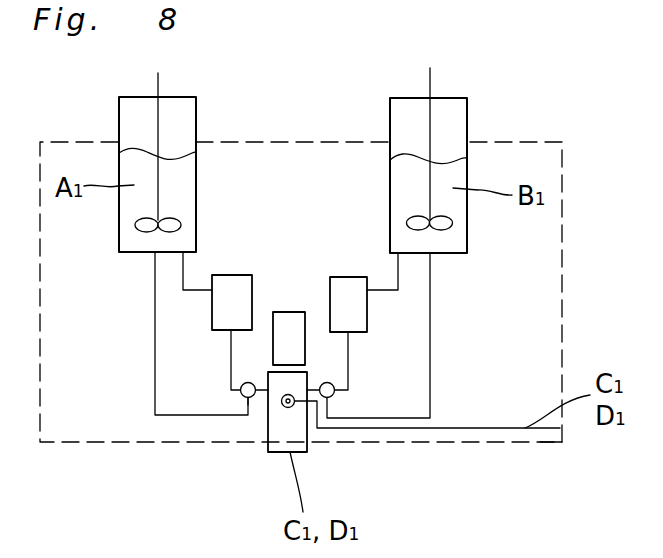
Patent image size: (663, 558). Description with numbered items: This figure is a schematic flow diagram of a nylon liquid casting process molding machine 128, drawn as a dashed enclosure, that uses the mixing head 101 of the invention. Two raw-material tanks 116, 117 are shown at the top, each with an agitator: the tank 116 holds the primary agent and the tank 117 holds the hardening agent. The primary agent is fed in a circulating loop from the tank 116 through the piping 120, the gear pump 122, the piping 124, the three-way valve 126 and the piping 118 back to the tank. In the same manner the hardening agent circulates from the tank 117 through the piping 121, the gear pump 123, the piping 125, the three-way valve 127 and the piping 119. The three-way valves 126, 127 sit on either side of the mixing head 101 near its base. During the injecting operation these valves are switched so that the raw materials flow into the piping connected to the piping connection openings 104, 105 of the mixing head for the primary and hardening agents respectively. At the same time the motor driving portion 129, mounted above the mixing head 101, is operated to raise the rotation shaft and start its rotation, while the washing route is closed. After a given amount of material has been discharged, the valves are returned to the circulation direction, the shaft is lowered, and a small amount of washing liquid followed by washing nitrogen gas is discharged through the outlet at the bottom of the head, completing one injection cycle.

The mixing head 101 is at (277, 452).
The piping connection opening 104 is at (262, 392).
The piping connection opening 105 is at (312, 402).
The raw-material tank 116 is at (183, 107).
The raw-material tank 117 is at (458, 107).
The piping 118 is at (153, 378).
The piping 119 is at (430, 375).
The piping 120 is at (183, 274).
The piping 121 is at (398, 273).
The gear pump 122 is at (228, 283).
The gear pump 123 is at (347, 283).
The piping 124 is at (231, 348).
The piping 125 is at (348, 350).
The three-way valve 126 is at (240, 399).
The three-way valve 127 is at (333, 396).
The nylon liquid casting process molding machine 128 is at (567, 447).
The motor driving portion 129 is at (288, 322).